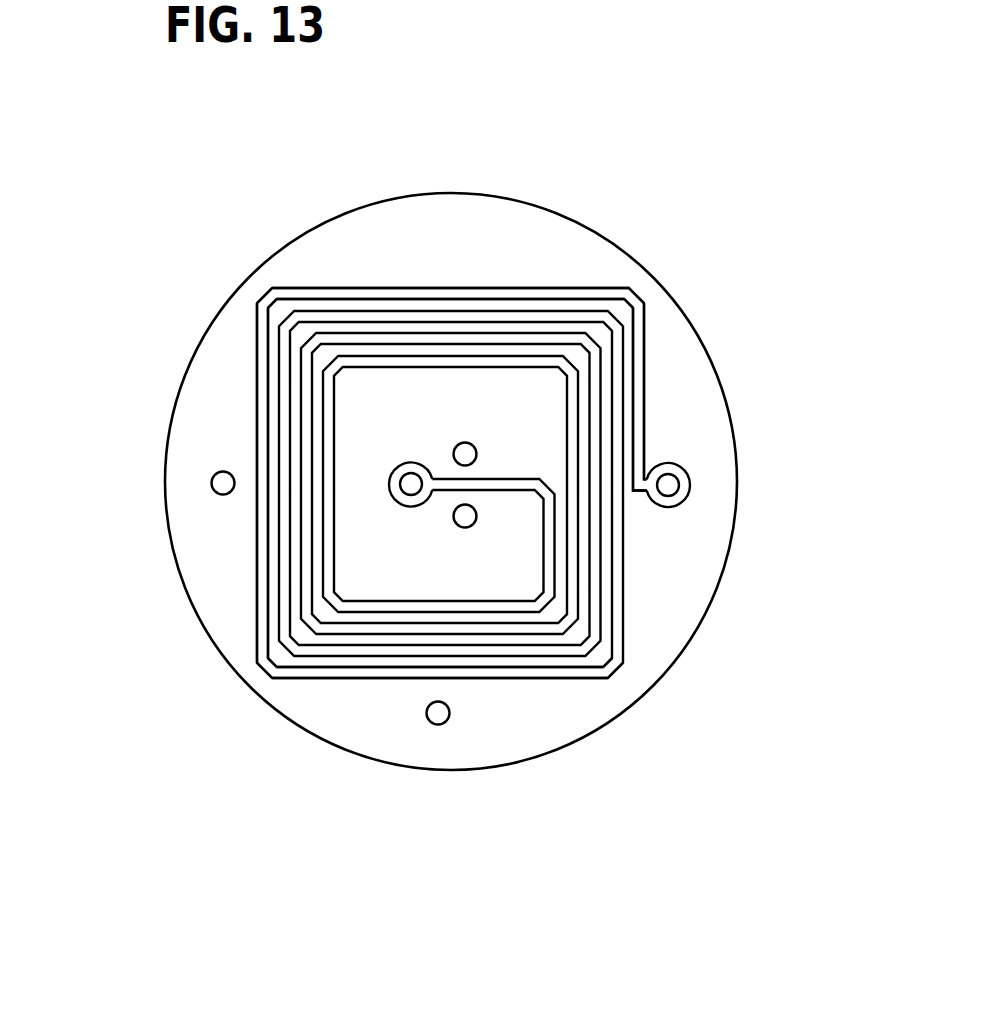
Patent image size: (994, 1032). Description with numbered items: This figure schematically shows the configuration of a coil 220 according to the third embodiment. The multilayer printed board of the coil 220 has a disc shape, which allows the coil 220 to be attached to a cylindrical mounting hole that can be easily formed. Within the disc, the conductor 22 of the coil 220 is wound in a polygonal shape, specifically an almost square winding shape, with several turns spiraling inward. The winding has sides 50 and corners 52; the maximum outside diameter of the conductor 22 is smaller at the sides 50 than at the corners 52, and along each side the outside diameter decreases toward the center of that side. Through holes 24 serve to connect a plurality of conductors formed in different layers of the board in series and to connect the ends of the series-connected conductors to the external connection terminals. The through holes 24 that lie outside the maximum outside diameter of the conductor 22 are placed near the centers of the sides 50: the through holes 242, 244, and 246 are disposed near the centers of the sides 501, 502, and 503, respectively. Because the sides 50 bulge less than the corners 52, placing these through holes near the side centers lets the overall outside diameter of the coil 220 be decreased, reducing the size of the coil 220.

The coil 220 is at (690, 173).
The conductor 22 is at (365, 318).
The sides 50 is at (447, 295).
The side 501 is at (637, 383).
The side 502 is at (262, 487).
The side 503 is at (447, 672).
The corners 52 is at (266, 289).
The through holes 24 is at (466, 450).
The through hole 242 is at (668, 485).
The through hole 244 is at (222, 483).
The through hole 246 is at (438, 713).